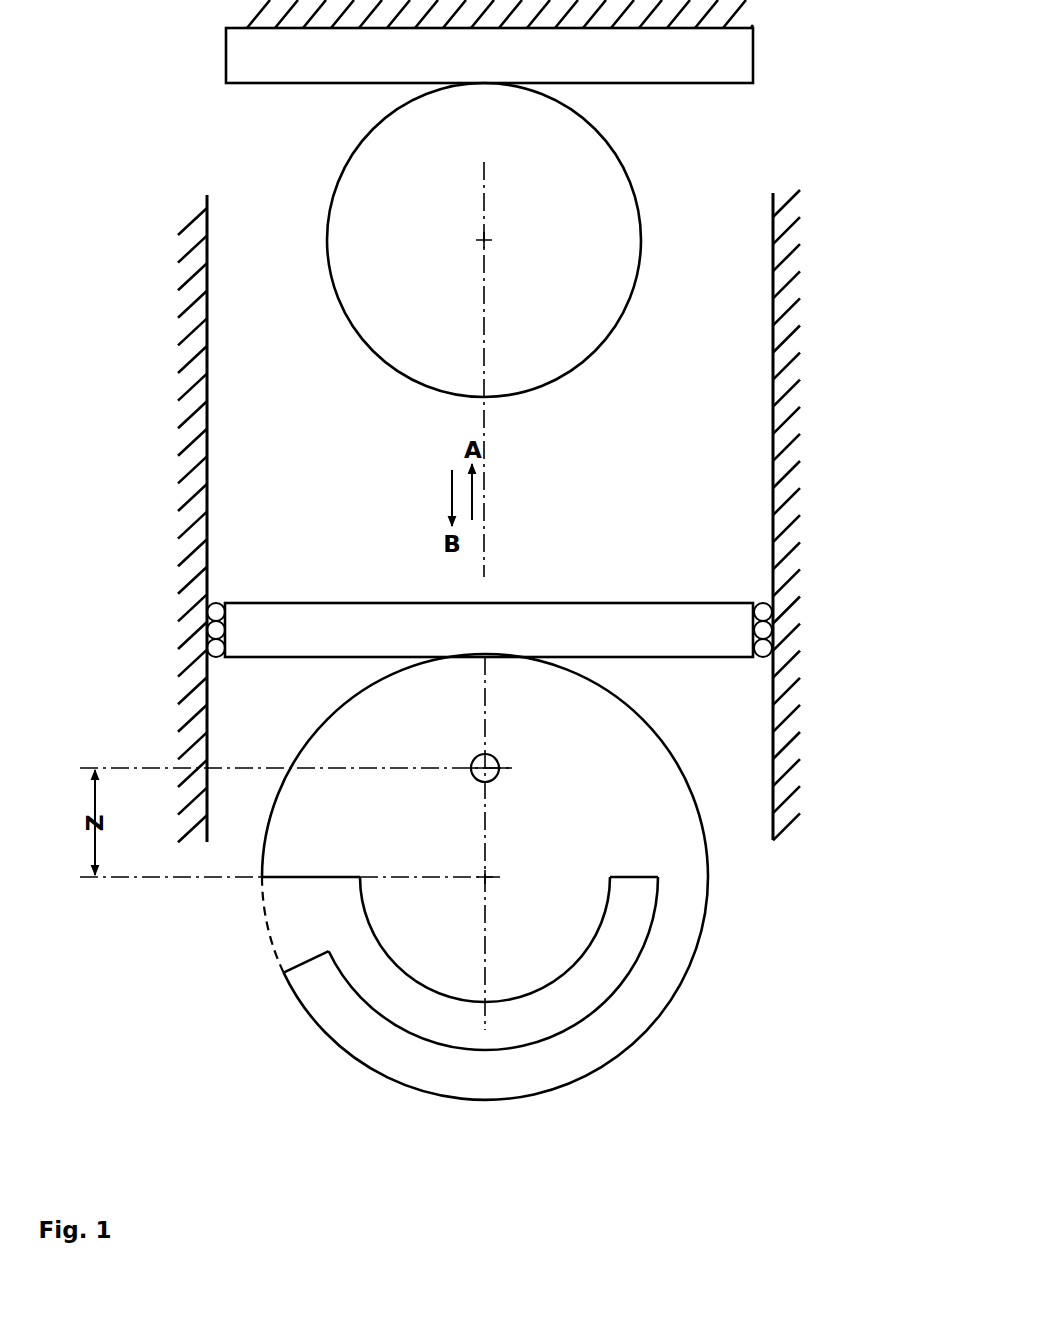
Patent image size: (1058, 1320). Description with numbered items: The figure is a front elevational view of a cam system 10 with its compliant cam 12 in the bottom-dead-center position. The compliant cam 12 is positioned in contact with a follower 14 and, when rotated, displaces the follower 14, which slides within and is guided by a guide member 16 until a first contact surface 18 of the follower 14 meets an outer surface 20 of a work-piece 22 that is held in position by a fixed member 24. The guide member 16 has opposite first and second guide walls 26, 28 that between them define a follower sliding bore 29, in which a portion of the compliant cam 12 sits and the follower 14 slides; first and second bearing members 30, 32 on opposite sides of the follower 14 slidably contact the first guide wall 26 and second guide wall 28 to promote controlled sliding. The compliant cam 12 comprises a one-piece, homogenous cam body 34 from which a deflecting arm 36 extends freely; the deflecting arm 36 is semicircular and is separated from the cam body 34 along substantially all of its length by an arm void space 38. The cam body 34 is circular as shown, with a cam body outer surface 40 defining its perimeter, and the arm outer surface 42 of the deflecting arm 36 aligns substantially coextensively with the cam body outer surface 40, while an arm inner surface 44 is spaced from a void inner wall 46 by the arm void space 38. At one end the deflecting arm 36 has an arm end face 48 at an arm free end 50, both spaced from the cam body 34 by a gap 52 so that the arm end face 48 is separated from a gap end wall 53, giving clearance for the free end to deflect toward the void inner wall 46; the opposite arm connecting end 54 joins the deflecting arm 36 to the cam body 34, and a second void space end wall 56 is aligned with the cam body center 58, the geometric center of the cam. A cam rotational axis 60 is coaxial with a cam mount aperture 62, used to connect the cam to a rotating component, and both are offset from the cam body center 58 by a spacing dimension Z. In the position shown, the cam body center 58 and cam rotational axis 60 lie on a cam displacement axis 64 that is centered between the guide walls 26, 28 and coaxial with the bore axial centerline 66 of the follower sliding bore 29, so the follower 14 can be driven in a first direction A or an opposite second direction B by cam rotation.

The cam system 10 is at (814, 86).
The compliant cam 12 is at (693, 920).
The follower 14 is at (667, 612).
The guide member 16 is at (773, 277).
The first contact surface 18 is at (571, 600).
The outer surface 20 is at (579, 366).
The work-piece 22 is at (614, 182).
The fixed member 24 is at (237, 62).
The first guide wall 26 is at (210, 455).
The second guide wall 28 is at (768, 232).
The follower sliding bore 29 is at (755, 405).
The first bearing member 30 is at (222, 603).
The second bearing member 32 is at (763, 655).
The cam body 34 is at (343, 757).
The deflecting arm 36 is at (585, 1062).
The arm void space 38 is at (578, 1007).
The cam body outer surface 40 is at (260, 842).
The arm outer surface 42 is at (331, 1047).
The arm inner surface 44 is at (343, 960).
The void inner wall 46 is at (417, 992).
The arm end face 48 is at (295, 960).
The arm free end 50 is at (315, 977).
The gap 52 is at (280, 912).
The gap end wall 53 is at (302, 882).
The arm connecting end 54 is at (677, 878).
The second void space end wall 56 is at (628, 880).
The cam body center 58 is at (490, 873).
The cam rotational axis 60 is at (497, 757).
The cam mount aperture 62 is at (498, 775).
The cam displacement axis 64 is at (487, 702).
The bore axial centerline 66 is at (488, 538).